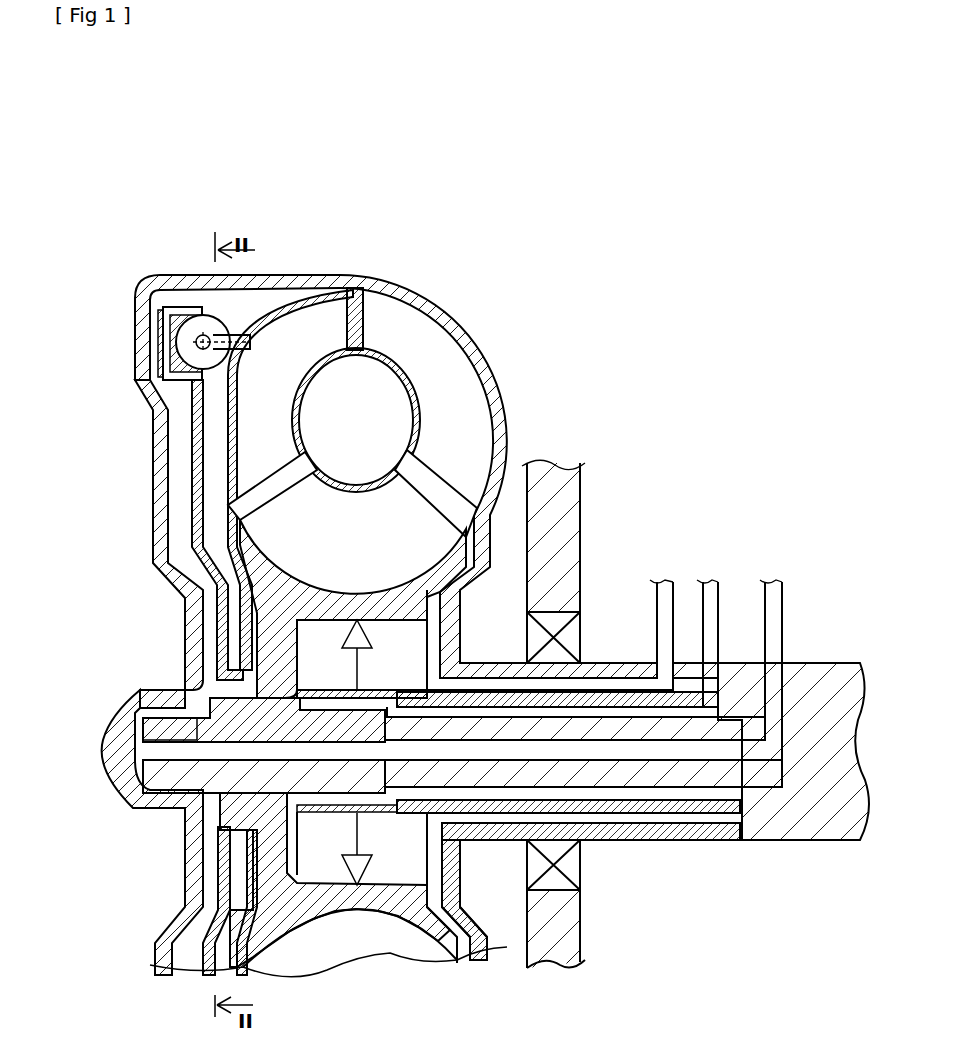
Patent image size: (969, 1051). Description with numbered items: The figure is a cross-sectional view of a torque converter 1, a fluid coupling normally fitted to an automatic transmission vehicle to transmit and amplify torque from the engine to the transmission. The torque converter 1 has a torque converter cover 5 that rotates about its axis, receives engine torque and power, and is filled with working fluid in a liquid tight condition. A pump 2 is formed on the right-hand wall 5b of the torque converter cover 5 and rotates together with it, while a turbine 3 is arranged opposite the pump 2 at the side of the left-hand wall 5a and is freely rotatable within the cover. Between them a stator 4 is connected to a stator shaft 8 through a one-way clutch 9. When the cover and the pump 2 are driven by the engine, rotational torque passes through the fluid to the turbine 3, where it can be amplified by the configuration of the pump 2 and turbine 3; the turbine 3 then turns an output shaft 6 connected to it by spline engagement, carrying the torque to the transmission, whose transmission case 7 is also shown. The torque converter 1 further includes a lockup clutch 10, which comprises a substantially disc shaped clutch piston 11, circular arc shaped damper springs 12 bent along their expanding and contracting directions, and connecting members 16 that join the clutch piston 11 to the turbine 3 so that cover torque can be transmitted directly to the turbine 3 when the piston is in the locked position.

The torque converter 1 is at (502, 318).
The pump 2 is at (457, 378).
The turbine 3 is at (320, 313).
The stator 4 is at (422, 550).
The torque converter cover 5 is at (425, 293).
The left-hand wall 5a is at (153, 490).
The right-hand wall 5b is at (506, 405).
The output shaft 6 is at (817, 668).
The transmission case 7 is at (567, 480).
The stator shaft 8 is at (705, 838).
The one-way clutch 9 is at (402, 645).
The lockup clutch 10 is at (172, 300).
The clutch piston 11 is at (192, 533).
The damper springs 12 is at (177, 330).
The connecting members 16 is at (240, 335).